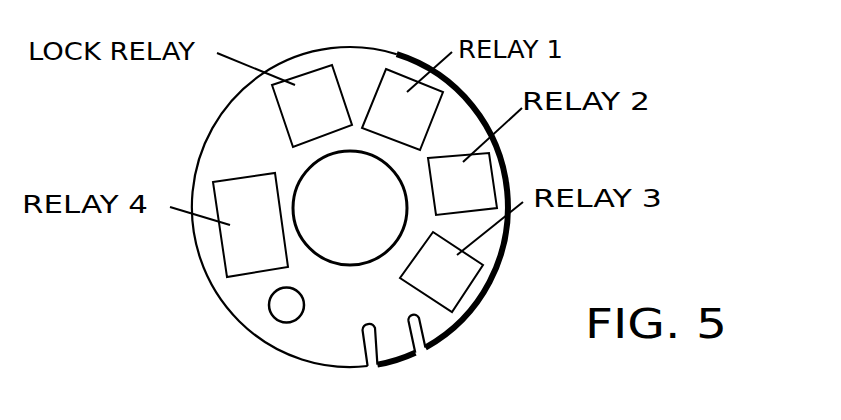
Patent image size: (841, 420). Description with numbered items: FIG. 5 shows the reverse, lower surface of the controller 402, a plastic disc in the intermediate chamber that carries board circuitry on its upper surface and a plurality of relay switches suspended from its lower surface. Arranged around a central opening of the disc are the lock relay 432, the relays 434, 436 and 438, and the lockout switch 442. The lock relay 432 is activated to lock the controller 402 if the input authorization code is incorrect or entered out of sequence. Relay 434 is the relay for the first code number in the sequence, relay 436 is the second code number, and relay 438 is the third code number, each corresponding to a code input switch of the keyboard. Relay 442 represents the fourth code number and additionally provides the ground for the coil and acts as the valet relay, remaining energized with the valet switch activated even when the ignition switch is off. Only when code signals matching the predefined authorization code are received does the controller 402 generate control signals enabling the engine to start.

The controller 402 is at (210, 133).
The lock relay 432 is at (337, 123).
The relay 434 is at (421, 126).
The relay 436 is at (487, 204).
The relay 438 is at (466, 288).
The lockout switch 442 is at (278, 258).